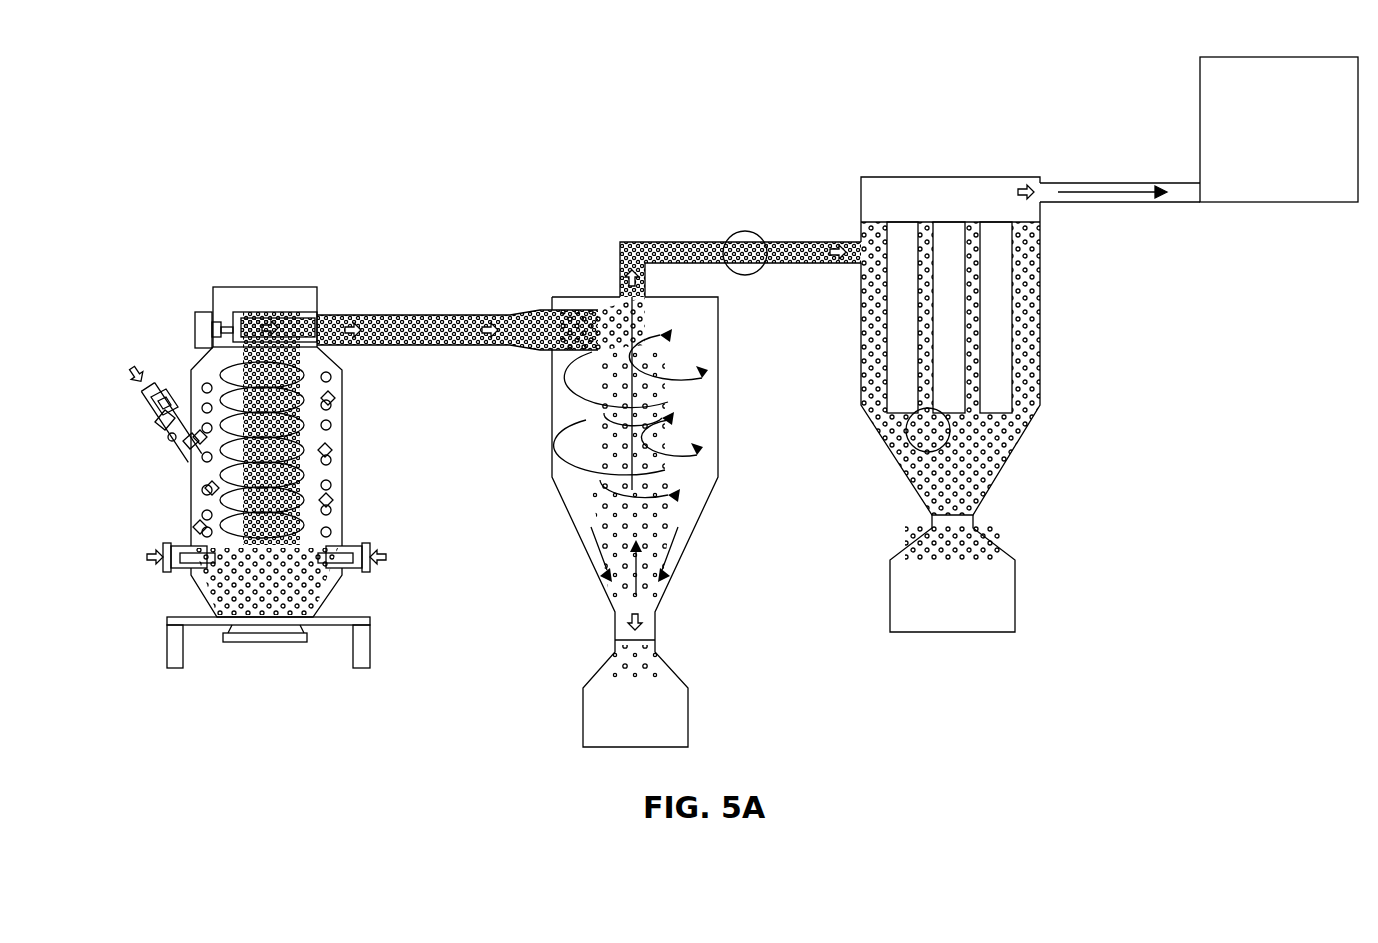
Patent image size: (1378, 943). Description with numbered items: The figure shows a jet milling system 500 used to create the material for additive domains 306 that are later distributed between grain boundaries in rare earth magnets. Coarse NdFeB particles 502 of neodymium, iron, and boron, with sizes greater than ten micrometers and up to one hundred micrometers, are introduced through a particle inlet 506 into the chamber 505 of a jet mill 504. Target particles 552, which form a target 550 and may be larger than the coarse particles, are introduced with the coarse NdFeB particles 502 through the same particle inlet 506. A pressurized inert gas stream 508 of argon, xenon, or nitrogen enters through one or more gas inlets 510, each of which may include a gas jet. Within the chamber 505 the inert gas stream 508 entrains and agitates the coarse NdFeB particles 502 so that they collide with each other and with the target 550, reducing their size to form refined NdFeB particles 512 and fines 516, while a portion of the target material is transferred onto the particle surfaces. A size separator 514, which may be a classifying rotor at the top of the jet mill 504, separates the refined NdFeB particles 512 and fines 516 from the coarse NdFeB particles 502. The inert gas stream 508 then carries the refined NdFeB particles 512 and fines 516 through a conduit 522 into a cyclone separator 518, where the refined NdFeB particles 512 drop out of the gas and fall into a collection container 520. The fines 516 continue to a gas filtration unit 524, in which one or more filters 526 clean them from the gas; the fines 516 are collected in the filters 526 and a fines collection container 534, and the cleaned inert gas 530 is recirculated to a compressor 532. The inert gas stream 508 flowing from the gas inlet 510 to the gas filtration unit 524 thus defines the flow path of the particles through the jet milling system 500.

The jet milling system 500 is at (133, 142).
The coarse NdFeB particles 502 is at (162, 410).
The jet mill 504 is at (198, 482).
The chamber 505 is at (297, 633).
The particle inlet 506 is at (153, 380).
The inert gas stream 508 is at (305, 427).
The gas inlet 510 is at (173, 543).
The refined NdFeB particles 512 is at (290, 385).
The size separator 514 is at (265, 330).
The fines 516 is at (333, 322).
The cyclone separator 518 is at (718, 407).
The collection container 520 is at (592, 717).
The transfer conduit 522 is at (423, 315).
The gas filtration unit 524 is at (1040, 318).
The filters 526 is at (1003, 286).
The cleaned inert gas 530 is at (1128, 190).
The compressor 532 is at (1292, 57).
The fines collection container 534 is at (1017, 612).
The target 550 is at (177, 448).
The target particles 552 is at (106, 442).
The additive domains 306 is at (806, 603).